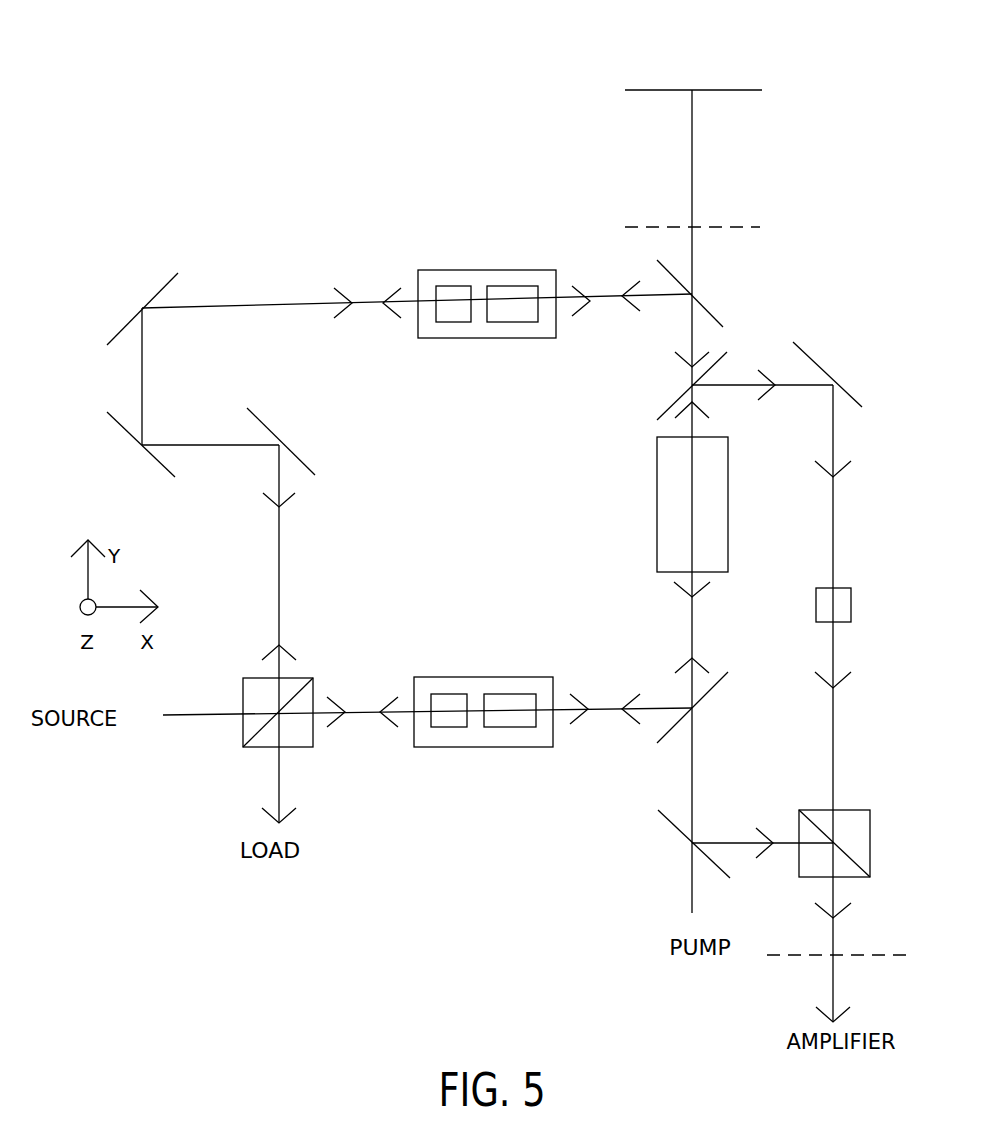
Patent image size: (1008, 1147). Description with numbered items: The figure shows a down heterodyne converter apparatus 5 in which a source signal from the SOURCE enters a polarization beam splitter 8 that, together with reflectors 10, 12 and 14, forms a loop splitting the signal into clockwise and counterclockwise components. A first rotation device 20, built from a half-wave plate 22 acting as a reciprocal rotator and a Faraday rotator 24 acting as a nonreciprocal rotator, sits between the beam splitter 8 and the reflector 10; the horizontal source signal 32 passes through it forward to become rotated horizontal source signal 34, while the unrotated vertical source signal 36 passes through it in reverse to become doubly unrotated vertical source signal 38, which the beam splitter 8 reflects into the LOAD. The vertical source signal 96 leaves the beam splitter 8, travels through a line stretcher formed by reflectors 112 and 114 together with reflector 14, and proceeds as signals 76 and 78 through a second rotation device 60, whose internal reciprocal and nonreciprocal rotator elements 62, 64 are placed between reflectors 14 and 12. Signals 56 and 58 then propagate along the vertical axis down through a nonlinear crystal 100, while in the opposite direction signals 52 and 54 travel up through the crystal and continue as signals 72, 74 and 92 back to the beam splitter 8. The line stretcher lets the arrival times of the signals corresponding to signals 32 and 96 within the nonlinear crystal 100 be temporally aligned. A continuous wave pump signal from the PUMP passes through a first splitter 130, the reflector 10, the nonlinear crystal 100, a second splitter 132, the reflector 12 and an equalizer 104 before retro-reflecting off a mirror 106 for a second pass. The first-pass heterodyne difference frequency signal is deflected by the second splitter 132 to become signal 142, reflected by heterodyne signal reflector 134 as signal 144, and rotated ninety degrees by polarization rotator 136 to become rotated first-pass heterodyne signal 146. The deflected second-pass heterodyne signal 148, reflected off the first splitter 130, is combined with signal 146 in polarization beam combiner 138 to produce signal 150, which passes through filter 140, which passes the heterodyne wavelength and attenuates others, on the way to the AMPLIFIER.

The down heterodyne converter apparatus 5 is at (145, 207).
The polarization beam splitter 8 is at (277, 727).
The reflector 10 is at (704, 707).
The reflector 12 is at (702, 293).
The reflector 14 is at (142, 305).
The first rotation device 20 is at (422, 677).
The half-wave plate 22 is at (450, 694).
The Faraday rotator 24 is at (500, 694).
The horizontal source signal 32 is at (333, 727).
The rotated horizontal source signal 34 is at (575, 725).
The unrotated vertical source signal 36 is at (627, 725).
The doubly unrotated vertical source signal 38 is at (385, 727).
The vertically-polarized signal 52 is at (679, 667).
The vertically-polarized signal 54 is at (707, 411).
The vertically-polarized signal 56 is at (679, 356).
The vertically-polarized signal 58 is at (708, 590).
The rotation device 60 is at (427, 338).
The modulator element 62 is at (452, 322).
The modulator element 64 is at (503, 322).
The vertically-polarized signal 72 is at (629, 285).
The vertically-polarized signal 74 is at (389, 290).
The vertically-polarized signal 76 is at (339, 290).
The vertically-polarized signal 78 is at (578, 288).
The rotated horizontal source signal 92 is at (266, 501).
The vertical source signal 96 is at (266, 655).
The nonlinear crystal 100 is at (657, 503).
The equalizer 104 is at (752, 227).
The mirror 106 is at (633, 90).
The reflector 112 is at (141, 447).
The reflector 114 is at (281, 433).
The first splitter 130 is at (685, 844).
The second splitter 132 is at (683, 386).
The heterodyne signal reflector 134 is at (827, 373).
The 90 degree polarization rotator 136 is at (828, 588).
The polarization beam combiner 138 is at (805, 810).
The filter 140 is at (833, 942).
The signal 142 is at (775, 391).
The signal 144 is at (858, 470).
The rotated first-pass heterodyne signal 146 is at (816, 672).
The deflected second-pass heterodyne signal 148 is at (758, 859).
The signal 150 is at (856, 906).